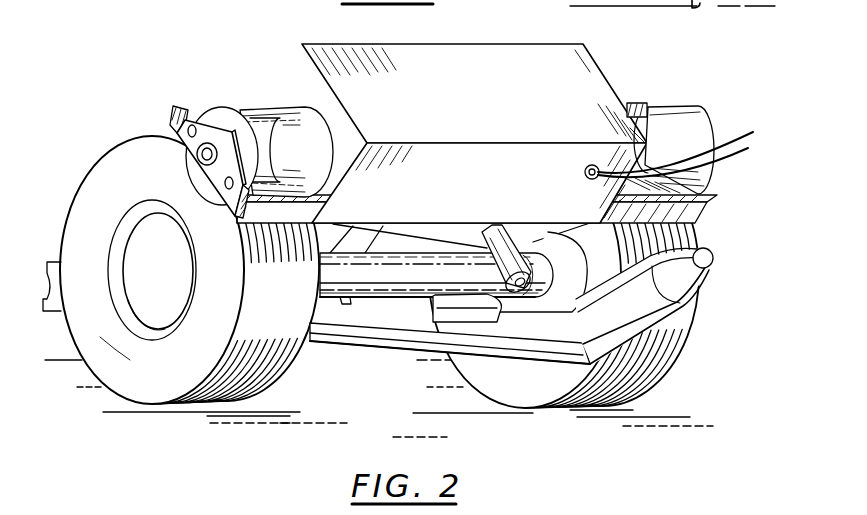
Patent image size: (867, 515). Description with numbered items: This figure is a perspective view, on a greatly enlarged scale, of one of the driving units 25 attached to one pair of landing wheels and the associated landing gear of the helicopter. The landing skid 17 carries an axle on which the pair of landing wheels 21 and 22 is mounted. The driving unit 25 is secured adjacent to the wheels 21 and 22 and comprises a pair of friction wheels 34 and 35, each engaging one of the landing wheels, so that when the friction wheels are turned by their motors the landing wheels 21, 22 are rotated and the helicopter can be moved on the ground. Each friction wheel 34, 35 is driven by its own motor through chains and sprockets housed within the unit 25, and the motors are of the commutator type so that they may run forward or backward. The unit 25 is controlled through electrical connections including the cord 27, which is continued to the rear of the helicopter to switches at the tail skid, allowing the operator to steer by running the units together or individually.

The landing skid 17 is at (412, 345).
The landing wheel 21 is at (120, 377).
The landing wheel 22 is at (568, 406).
The driving unit 25 is at (458, 44).
The cord 27 is at (713, 150).
The friction wheel 34 is at (235, 118).
The friction wheel 35 is at (686, 115).